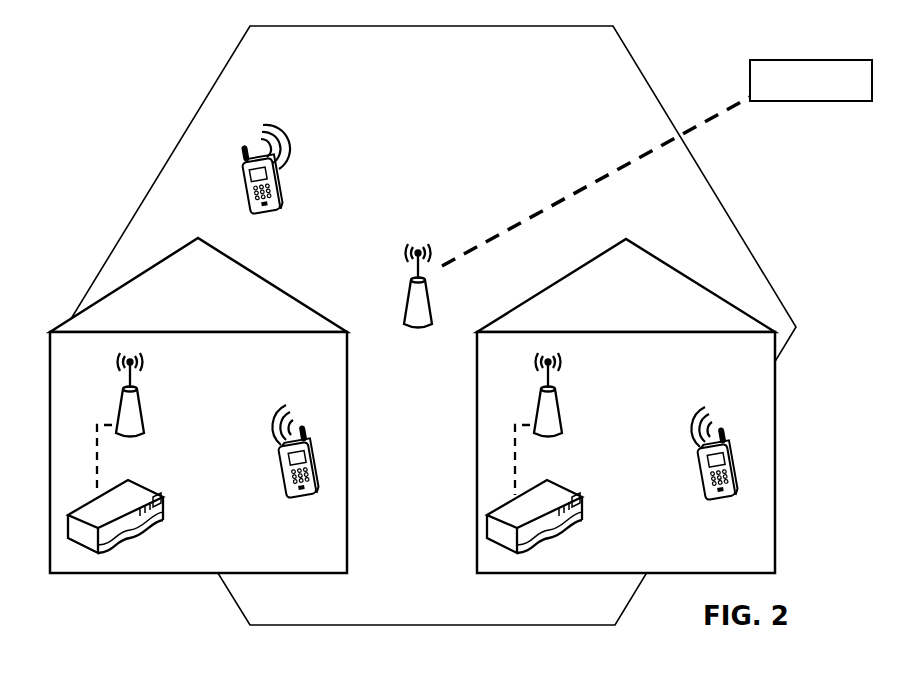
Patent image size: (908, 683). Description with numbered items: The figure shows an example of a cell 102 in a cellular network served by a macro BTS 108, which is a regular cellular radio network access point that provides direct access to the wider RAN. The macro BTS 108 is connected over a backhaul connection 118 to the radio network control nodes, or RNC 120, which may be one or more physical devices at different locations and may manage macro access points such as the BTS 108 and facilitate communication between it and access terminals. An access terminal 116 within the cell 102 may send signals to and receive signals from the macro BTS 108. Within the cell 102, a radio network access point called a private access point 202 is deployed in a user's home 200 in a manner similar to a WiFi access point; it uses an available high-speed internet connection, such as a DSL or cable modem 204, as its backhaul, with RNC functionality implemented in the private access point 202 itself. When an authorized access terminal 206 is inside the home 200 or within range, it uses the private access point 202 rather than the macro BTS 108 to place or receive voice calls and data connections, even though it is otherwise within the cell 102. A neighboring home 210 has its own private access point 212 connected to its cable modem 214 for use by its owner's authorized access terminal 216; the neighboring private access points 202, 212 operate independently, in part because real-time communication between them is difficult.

The cell 102 is at (209, 50).
The macro BTS 108 is at (404, 326).
The mobile station 116 is at (238, 214).
The backhaul connection 118 is at (573, 185).
The radio network control nodes (RNC) 120 is at (811, 80).
The home 200 is at (151, 575).
The private access point 202 is at (144, 434).
The cable modem 204 is at (118, 521).
The access terminal 206 is at (313, 498).
The neighboring home 210 is at (566, 575).
The private access point 212 is at (562, 434).
The cable modem 214 is at (536, 522).
The access terminal 216 is at (735, 500).